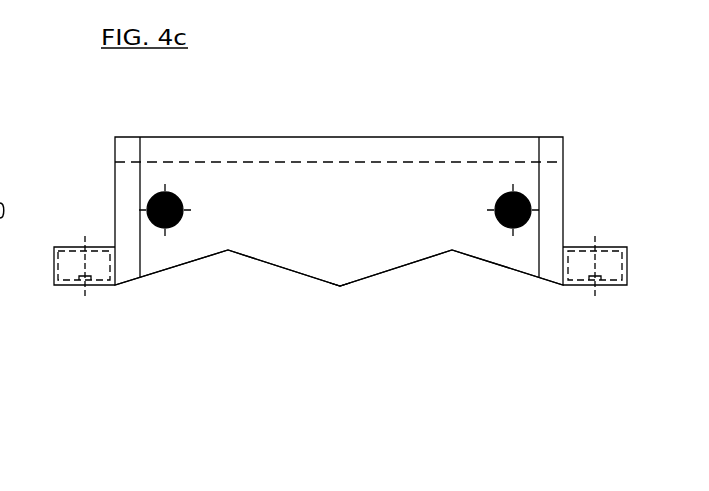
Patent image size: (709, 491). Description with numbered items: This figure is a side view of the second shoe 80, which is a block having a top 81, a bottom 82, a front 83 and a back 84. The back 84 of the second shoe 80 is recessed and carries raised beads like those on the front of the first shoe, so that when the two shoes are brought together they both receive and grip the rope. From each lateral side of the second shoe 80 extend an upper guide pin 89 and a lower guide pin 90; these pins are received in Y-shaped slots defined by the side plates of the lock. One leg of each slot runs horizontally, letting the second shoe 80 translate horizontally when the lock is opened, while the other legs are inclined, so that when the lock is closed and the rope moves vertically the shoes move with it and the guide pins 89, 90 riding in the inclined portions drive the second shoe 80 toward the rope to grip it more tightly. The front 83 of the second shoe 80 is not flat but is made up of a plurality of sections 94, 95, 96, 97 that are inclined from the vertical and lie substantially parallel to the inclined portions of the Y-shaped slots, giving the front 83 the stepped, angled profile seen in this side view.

The second shoe 80 is at (383, 193).
The top 81 is at (563, 195).
The bottom 82 is at (115, 192).
The front 83 is at (342, 320).
The back 84 is at (303, 150).
The upper guide pin 89 is at (498, 203).
The lower guide pin 90 is at (182, 199).
The section 94 is at (509, 268).
The section 95 is at (396, 270).
The section 96 is at (284, 268).
The section 97 is at (173, 268).